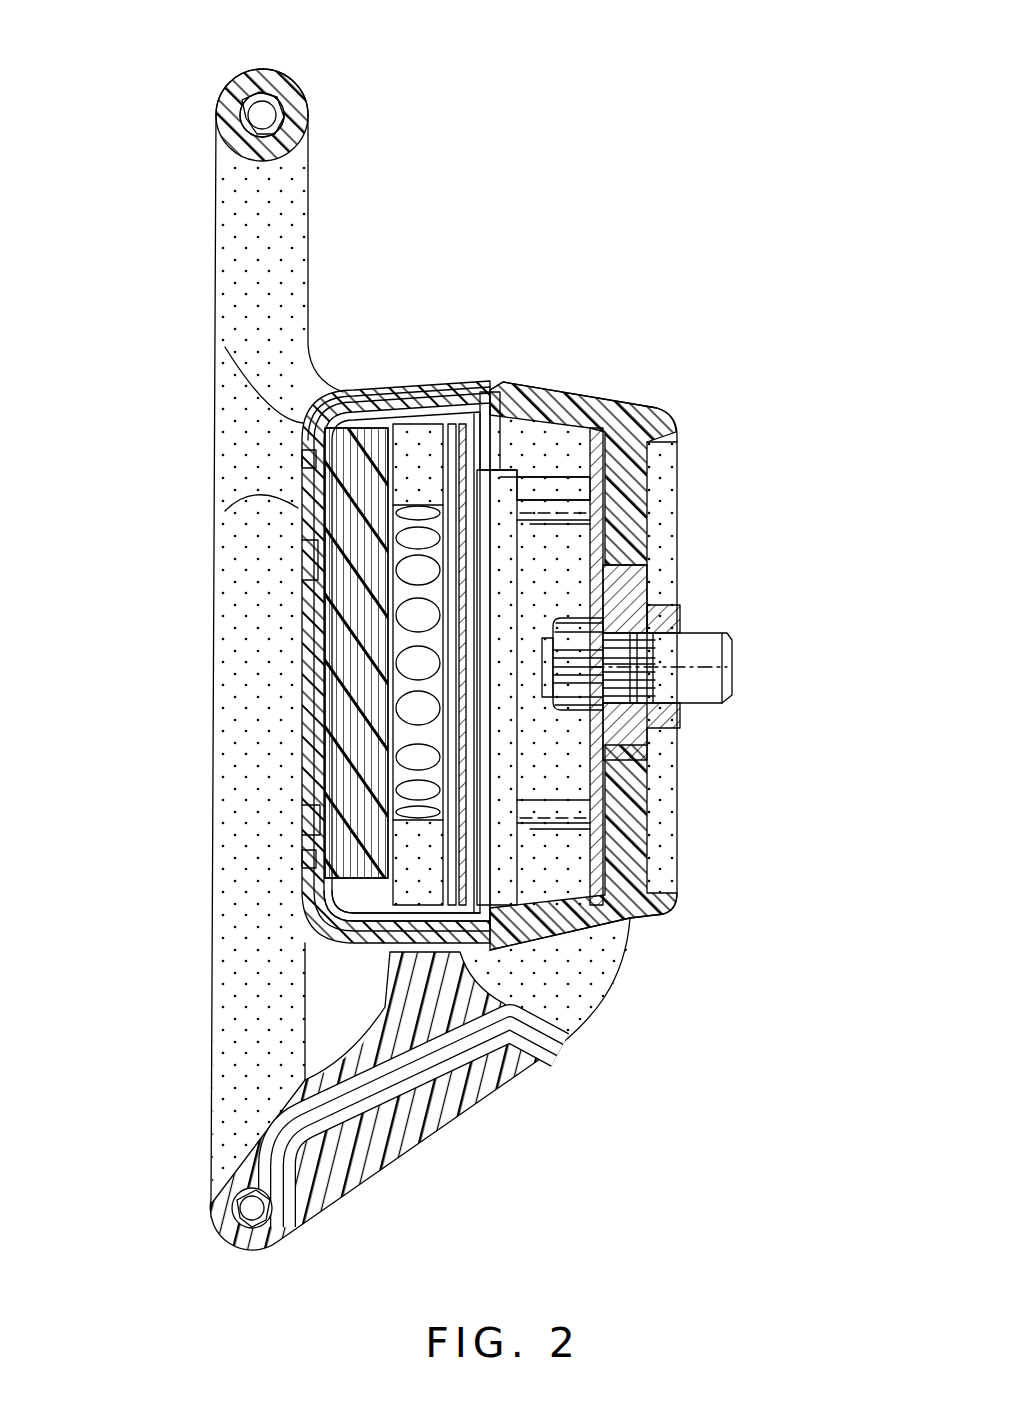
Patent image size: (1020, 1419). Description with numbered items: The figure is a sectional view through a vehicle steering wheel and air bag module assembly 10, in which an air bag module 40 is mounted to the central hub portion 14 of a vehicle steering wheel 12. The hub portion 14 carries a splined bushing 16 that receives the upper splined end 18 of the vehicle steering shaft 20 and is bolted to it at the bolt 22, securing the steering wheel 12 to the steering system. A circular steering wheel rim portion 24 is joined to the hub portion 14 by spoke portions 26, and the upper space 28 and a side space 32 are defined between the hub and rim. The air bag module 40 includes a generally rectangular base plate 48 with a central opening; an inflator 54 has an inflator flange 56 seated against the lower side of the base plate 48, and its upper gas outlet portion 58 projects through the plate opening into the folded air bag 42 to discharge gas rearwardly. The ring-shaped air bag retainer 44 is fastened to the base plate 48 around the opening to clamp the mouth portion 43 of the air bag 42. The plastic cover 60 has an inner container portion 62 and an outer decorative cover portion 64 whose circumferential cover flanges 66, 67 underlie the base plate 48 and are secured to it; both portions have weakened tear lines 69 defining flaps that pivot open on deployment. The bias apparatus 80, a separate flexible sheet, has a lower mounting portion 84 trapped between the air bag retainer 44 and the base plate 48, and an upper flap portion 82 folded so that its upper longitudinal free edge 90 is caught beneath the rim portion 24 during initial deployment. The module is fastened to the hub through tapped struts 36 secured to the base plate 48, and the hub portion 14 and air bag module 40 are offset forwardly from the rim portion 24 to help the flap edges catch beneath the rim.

The vehicle steering wheel and air bag module assembly 10 is at (100, 172).
The vehicle steering wheel 12 is at (298, 88).
The hub portion 14 is at (596, 392).
The splined bushing 16 is at (632, 578).
The upper splined end 18 is at (625, 700).
The vehicle steering shaft 20 is at (733, 639).
The bolt 22 is at (592, 634).
The steering wheel rim portion 24 is at (237, 93).
The spoke portions 26 is at (452, 1090).
The upper space 28 is at (265, 162).
The side space 32 is at (312, 1020).
The tapped struts 36 is at (585, 507).
The air bag module 40 is at (415, 388).
The air bag 42 is at (332, 770).
The mouth portion 43 is at (520, 492).
The air bag retainer 44 is at (450, 562).
The base plate 48 is at (465, 538).
The inflator 54 is at (506, 474).
The inflator flange 56 is at (475, 606).
The upper gas outlet portion 58 is at (405, 632).
The cover 60 is at (447, 385).
The inner container portion 62 is at (386, 393).
The outer decorative cover portion 64 is at (363, 392).
The cover flange 66 is at (470, 398).
The cover flange 67 is at (490, 398).
The weakened tear lines 69 is at (310, 462).
The bias apparatus 80 is at (305, 560).
The upper flap portion 82 is at (320, 820).
The lower mounting portion 84 is at (372, 938).
The upper longitudinal free edge 90 is at (335, 905).